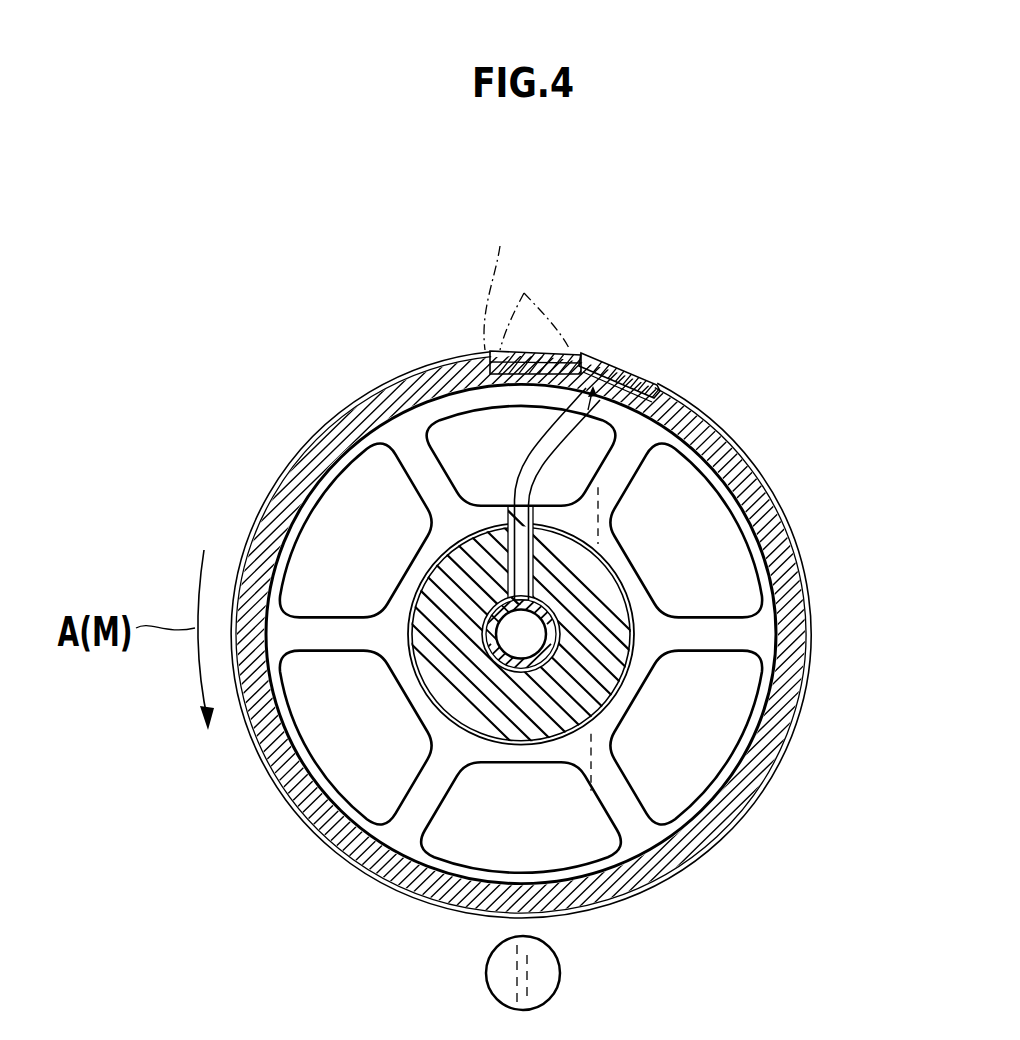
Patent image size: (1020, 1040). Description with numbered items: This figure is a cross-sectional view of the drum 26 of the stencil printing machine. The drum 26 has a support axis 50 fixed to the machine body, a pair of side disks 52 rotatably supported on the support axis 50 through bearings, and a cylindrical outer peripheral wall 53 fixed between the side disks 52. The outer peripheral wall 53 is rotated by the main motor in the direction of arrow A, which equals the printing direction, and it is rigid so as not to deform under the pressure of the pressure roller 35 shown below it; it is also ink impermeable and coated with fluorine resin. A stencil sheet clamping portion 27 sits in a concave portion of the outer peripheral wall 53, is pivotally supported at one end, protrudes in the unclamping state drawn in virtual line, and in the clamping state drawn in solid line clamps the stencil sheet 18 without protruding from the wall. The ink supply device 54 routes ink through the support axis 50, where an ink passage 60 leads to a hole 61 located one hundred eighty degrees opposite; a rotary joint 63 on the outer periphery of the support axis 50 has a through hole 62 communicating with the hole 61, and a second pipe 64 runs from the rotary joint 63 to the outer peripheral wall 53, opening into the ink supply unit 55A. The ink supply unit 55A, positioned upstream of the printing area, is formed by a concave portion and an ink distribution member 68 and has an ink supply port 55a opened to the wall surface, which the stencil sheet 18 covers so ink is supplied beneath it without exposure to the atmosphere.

The stencil sheet 18 is at (703, 862).
The drum 26 is at (335, 326).
The stencil sheet clamping portion 27 is at (557, 295).
The pressure roller 35 is at (556, 972).
The support axis 50 is at (543, 650).
The side disk 52 is at (748, 630).
The outer peripheral wall 53 is at (762, 753).
The ink supply device 54 is at (562, 462).
The ink supply unit 55A is at (648, 345).
The ink supply port 55a is at (658, 378).
The ink passage 60 is at (497, 657).
The hole 61 is at (505, 745).
The through hole 62 is at (600, 578).
The rotary joint 63 is at (430, 548).
The second pipe 64 is at (548, 440).
The ink distribution member 68 is at (600, 354).